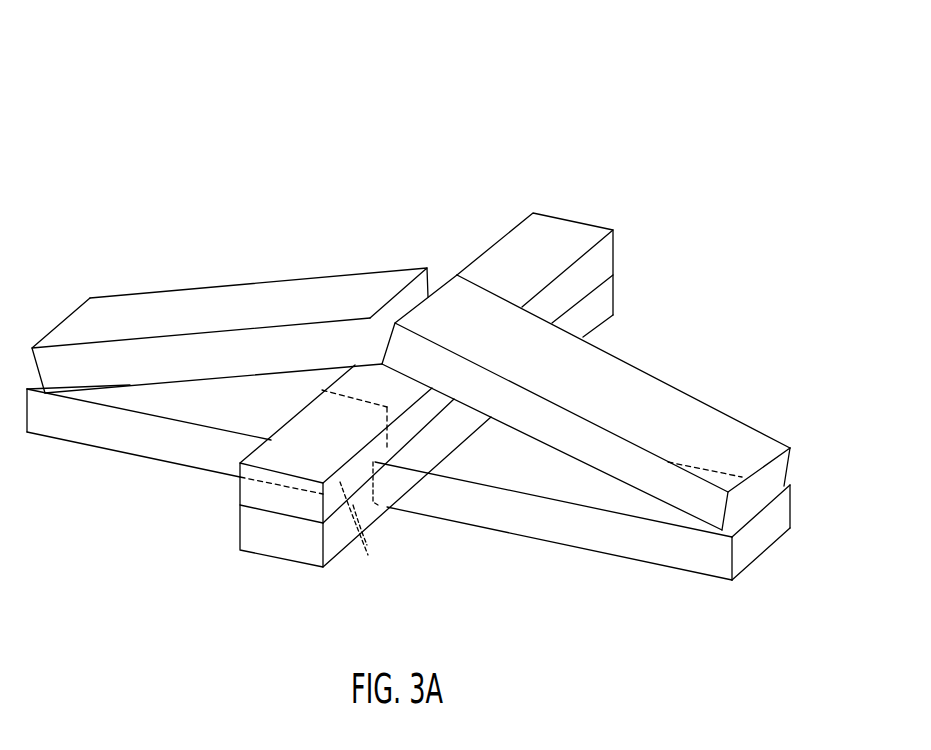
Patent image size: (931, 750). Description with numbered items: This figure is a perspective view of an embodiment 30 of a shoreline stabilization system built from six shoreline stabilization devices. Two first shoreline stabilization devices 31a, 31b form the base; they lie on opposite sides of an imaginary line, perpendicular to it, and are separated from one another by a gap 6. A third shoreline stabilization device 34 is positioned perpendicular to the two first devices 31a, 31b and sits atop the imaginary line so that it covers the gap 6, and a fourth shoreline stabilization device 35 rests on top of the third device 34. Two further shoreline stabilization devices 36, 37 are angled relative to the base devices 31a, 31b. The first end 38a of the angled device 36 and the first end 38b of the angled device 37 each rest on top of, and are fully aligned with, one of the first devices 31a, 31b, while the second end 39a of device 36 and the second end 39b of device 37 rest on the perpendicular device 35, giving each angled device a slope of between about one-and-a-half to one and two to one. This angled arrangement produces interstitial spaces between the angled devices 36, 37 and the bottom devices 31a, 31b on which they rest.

The shoreline stabilization system 30 is at (210, 103).
The first shoreline stabilization device 31a is at (121, 441).
The first shoreline stabilization device 31b is at (537, 527).
The third shoreline stabilization device 34 is at (262, 538).
The fourth shoreline stabilization device 35 is at (551, 215).
The angled shoreline stabilization device 36 is at (157, 298).
The angled shoreline stabilization device 37 is at (738, 418).
The first end 38a is at (72, 313).
The first end 38b is at (788, 479).
The second end 39a is at (392, 302).
The second end 39b is at (431, 297).
The gap 6 is at (371, 534).